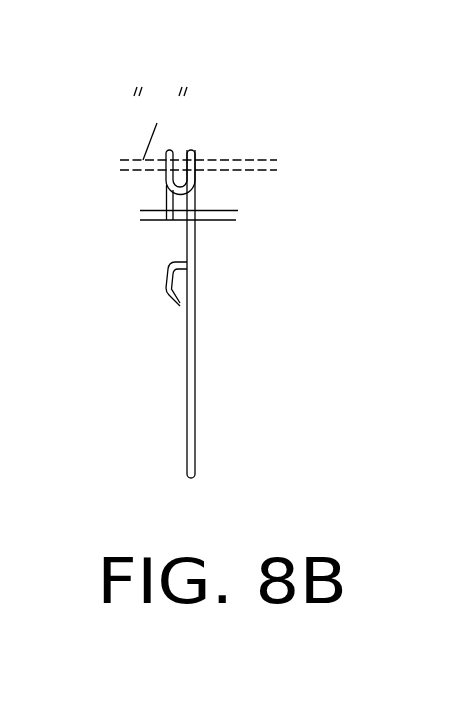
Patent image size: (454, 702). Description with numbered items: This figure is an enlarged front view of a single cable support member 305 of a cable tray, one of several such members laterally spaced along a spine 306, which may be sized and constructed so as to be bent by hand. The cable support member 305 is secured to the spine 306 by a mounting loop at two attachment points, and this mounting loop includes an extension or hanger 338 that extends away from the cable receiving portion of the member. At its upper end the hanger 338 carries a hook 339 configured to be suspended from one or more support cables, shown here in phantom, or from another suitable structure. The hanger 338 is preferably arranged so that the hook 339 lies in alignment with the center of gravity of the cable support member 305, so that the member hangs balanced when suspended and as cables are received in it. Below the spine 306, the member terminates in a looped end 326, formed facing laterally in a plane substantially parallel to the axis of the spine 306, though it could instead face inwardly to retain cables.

The cable support member 305 is at (336, 137).
The spine 306 is at (239, 222).
The looped end 326 is at (189, 269).
The hanger 338 is at (197, 162).
The hook 339 is at (165, 180).